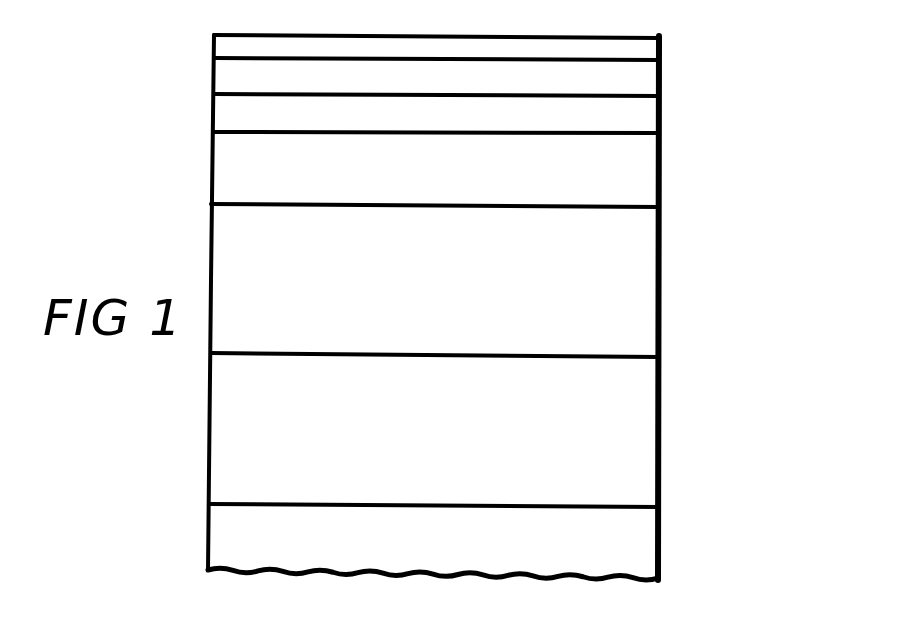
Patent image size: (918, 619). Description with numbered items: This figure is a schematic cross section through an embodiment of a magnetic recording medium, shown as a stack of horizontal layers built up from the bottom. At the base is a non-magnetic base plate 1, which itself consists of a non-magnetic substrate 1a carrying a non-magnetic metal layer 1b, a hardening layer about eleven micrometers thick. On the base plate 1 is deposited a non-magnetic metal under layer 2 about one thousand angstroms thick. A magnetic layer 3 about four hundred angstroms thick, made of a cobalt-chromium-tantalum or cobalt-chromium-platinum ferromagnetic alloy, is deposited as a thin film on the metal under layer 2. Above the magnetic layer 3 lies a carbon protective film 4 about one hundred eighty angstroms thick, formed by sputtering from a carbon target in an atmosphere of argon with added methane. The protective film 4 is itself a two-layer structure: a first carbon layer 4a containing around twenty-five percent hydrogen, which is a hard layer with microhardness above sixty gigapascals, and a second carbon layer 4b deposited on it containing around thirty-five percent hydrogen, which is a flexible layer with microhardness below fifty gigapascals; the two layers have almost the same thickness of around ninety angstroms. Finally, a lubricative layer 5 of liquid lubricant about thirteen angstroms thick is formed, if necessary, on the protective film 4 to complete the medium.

The non-magnetic base plate 1 is at (518, 502).
The non-magnetic substrate 1a is at (490, 552).
The non-magnetic metal layer 1b is at (636, 457).
The non-magnetic metal under layer 2 is at (633, 282).
The magnetic layer 3 is at (643, 180).
The protective film 4 is at (517, 93).
The first carbon layer 4a is at (647, 118).
The second carbon layer 4b is at (650, 80).
The lubricative layer 5 is at (652, 50).